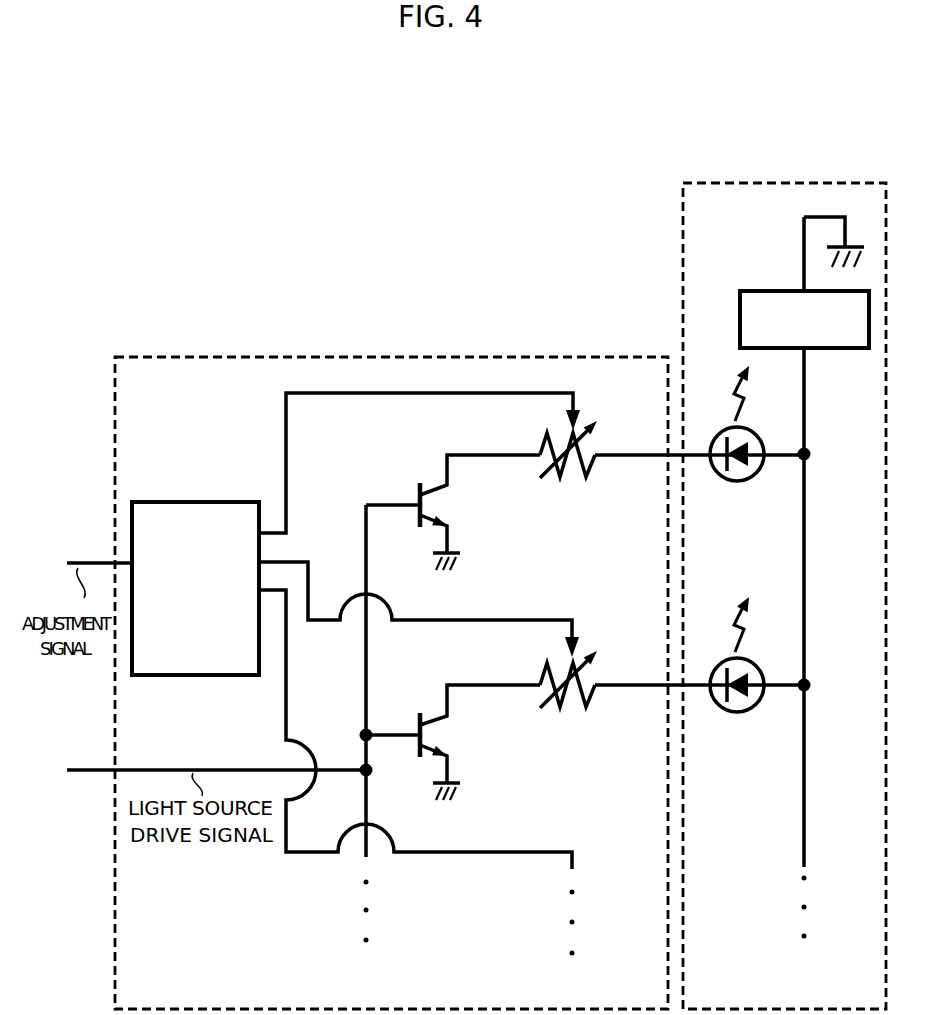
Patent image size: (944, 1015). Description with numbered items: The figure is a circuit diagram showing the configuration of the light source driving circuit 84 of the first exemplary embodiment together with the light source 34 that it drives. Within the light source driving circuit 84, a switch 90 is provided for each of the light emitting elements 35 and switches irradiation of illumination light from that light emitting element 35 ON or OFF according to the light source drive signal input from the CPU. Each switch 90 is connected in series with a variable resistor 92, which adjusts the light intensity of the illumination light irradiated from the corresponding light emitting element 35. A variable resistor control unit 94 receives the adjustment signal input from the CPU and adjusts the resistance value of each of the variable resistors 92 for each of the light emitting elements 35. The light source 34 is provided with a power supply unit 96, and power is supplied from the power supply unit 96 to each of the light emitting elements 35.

The light source 34 is at (787, 181).
The light source driving circuit 84 is at (358, 356).
The switch 90 is at (428, 473).
The variable resistor 92 is at (554, 490).
The variable resistor control unit 94 is at (190, 501).
The light emitting element 35 is at (733, 483).
The power supply unit 96 is at (835, 349).